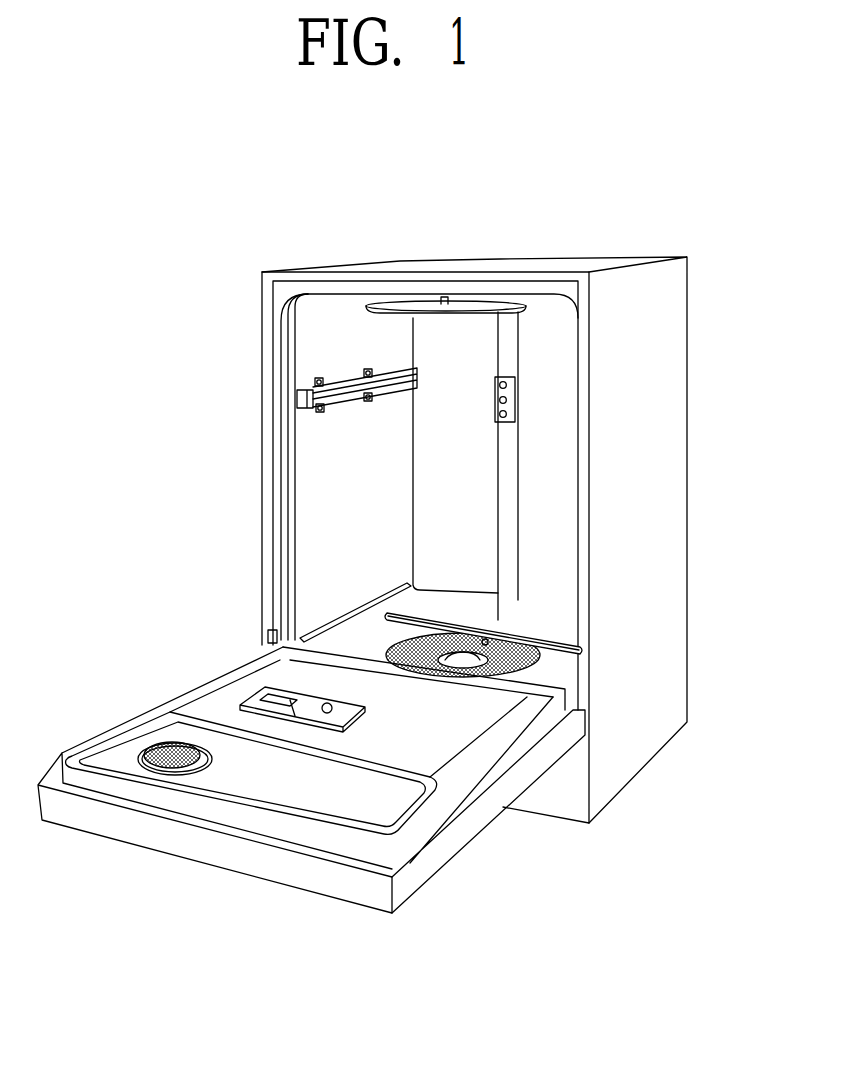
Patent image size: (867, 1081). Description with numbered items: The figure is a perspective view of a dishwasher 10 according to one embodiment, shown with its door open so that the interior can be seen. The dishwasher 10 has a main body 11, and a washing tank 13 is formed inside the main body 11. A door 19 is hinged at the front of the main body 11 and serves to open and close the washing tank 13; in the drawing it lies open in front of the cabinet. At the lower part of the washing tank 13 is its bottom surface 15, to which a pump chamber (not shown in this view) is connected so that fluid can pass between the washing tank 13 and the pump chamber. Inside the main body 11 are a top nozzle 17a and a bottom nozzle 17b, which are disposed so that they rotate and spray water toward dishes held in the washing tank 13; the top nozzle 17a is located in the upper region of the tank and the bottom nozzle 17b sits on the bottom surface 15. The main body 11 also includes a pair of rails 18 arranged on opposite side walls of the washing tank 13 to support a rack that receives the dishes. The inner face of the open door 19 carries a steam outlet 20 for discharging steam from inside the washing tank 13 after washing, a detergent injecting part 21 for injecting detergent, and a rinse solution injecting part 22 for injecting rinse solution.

The dishwasher 10 is at (312, 218).
The main body 11 is at (660, 448).
The washing tank 13 is at (348, 477).
The bottom surface 15 is at (560, 668).
The top nozzle 17a is at (462, 305).
The bottom nozzle 17b is at (540, 635).
The rails 18 is at (341, 382).
The door 19 is at (425, 870).
The steam outlet 20 is at (148, 766).
The detergent injecting part 21 is at (270, 698).
The rinse solution injecting part 22 is at (327, 703).